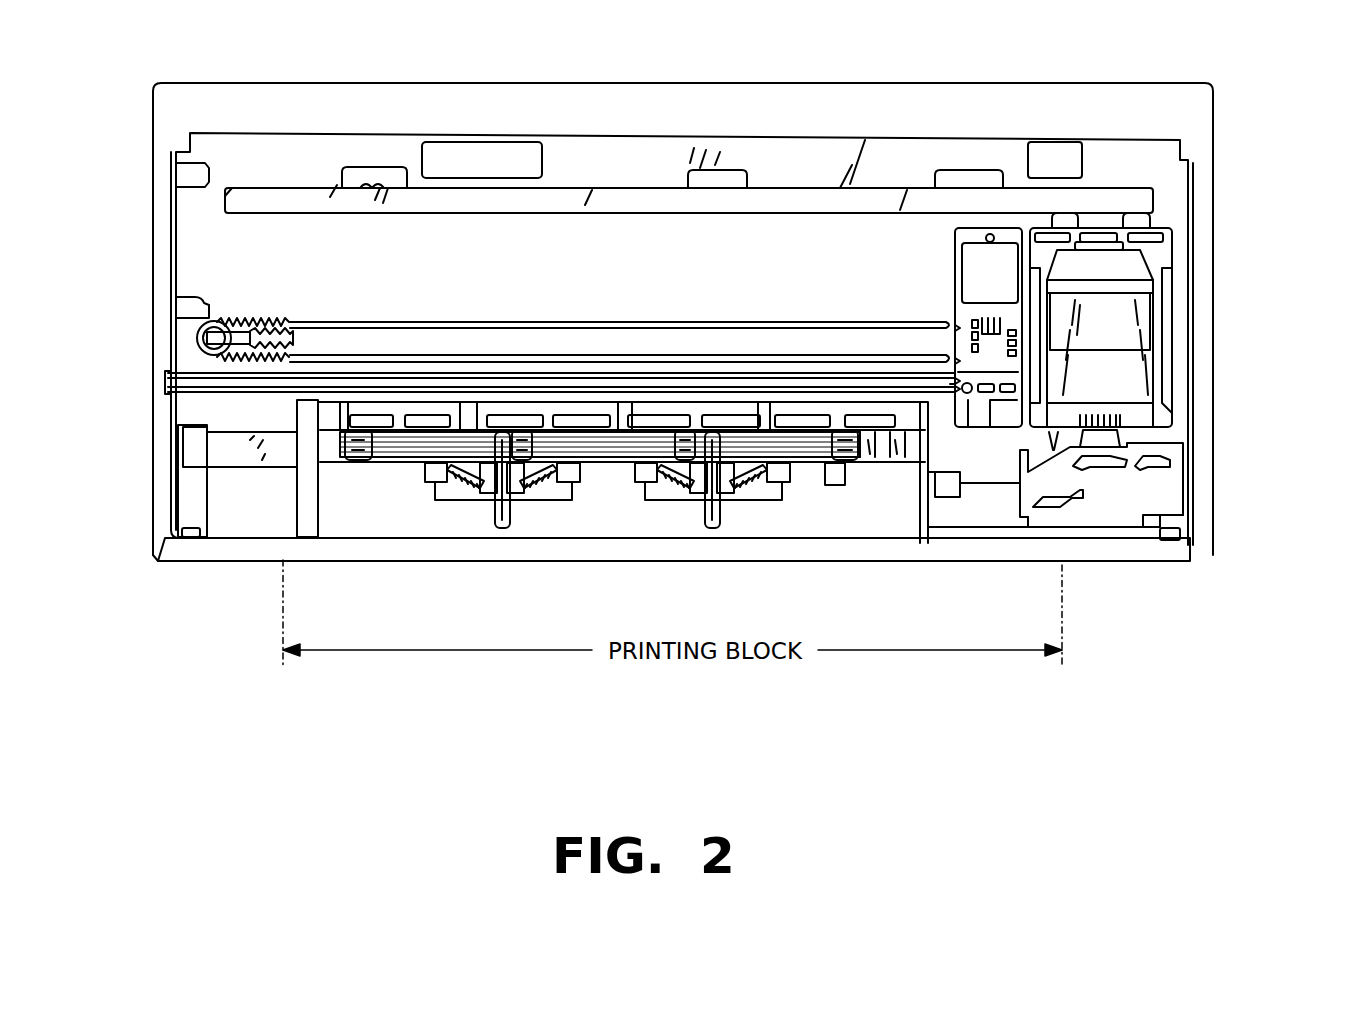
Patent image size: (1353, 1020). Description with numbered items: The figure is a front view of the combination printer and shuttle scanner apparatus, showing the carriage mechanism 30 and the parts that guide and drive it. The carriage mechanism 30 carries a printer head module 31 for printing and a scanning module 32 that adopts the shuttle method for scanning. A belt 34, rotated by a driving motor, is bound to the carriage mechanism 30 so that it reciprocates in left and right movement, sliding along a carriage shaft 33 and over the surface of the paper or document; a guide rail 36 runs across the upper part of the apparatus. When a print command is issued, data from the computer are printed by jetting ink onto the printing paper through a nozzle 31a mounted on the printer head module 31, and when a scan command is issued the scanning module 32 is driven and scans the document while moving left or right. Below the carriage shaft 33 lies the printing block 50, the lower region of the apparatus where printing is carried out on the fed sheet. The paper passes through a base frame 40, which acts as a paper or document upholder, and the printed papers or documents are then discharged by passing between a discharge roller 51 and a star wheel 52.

The carriage mechanism 30 is at (1005, 448).
The printer head module 31 is at (1178, 356).
The nozzle 31a is at (1197, 432).
The scanning module 32 is at (975, 278).
The carriage shaft 33 is at (213, 377).
The belt 34 is at (628, 322).
The guide rail 36 is at (1153, 196).
The base frame 40 is at (385, 505).
The printing block 50 is at (540, 515).
The discharge roller 51 is at (500, 517).
The star wheel 52 is at (462, 482).